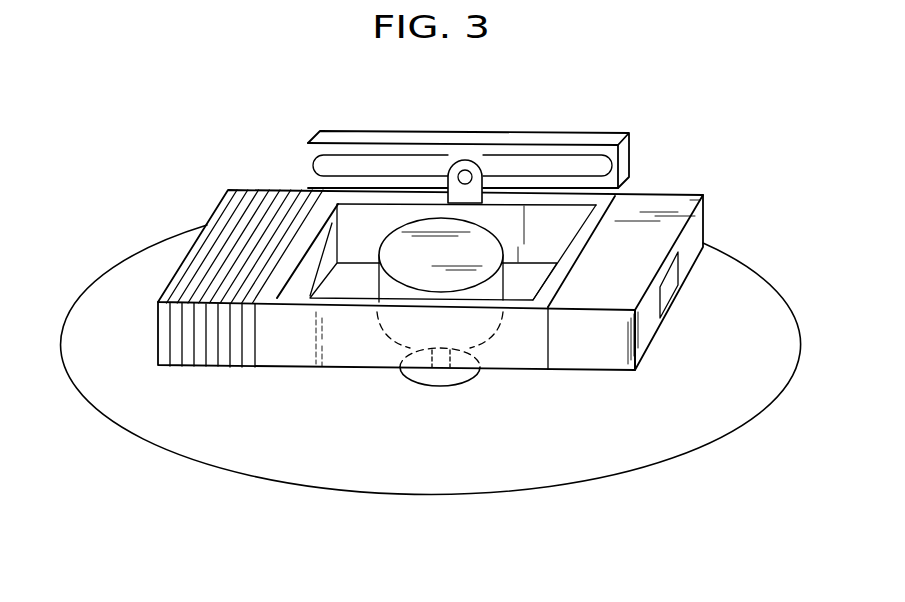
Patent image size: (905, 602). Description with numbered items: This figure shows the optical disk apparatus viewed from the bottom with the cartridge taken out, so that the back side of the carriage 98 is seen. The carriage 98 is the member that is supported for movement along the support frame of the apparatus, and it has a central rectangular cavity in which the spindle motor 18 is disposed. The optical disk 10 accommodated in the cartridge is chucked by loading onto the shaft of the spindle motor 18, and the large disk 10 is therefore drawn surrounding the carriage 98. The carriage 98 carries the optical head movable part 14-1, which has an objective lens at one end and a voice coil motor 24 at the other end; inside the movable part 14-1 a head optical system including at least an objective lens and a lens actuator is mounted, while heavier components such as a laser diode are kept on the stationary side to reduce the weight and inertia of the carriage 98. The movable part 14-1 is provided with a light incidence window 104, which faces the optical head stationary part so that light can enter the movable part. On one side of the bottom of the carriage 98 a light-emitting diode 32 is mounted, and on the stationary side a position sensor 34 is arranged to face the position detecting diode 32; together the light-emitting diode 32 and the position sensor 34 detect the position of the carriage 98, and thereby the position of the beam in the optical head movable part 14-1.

The optical head movable part 1 is at (430, 315).
The optical disk 10 is at (266, 462).
The optical head movable part 14 is at (582, 360).
The spindle motor 18 is at (403, 232).
The voice coil motor 24 is at (255, 208).
The light-emitting diode 32 is at (461, 161).
The position sensor 34 is at (567, 163).
The carriage 98 is at (273, 357).
The light incidence window 104 is at (672, 278).